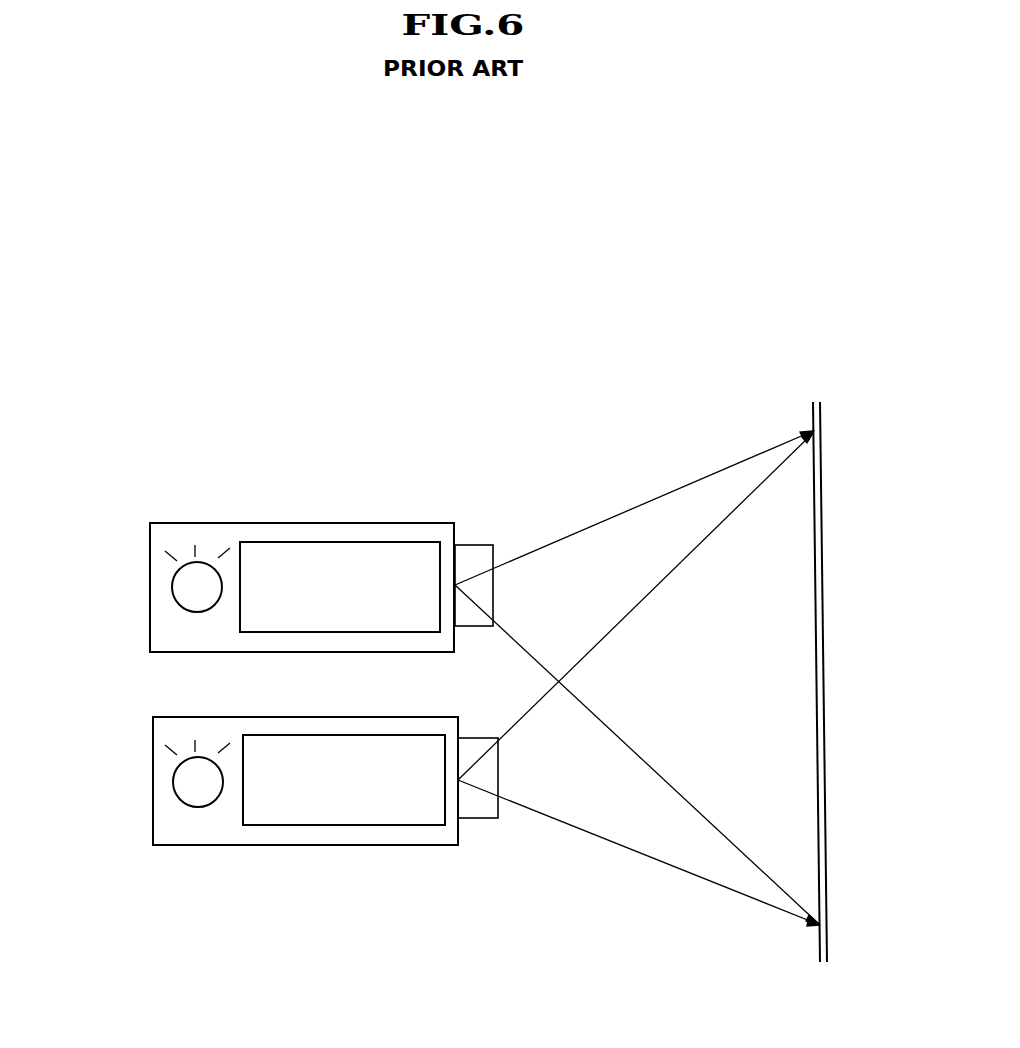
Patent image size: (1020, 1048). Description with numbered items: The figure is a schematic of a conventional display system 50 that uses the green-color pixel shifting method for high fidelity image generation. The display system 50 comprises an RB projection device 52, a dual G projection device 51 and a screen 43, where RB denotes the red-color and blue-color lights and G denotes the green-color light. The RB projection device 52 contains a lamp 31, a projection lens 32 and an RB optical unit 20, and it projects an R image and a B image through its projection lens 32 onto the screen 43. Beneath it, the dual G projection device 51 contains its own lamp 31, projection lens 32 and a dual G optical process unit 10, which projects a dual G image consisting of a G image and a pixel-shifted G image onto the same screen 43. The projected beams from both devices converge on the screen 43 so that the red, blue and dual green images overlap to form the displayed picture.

The display system 50 is at (513, 278).
The RB projection device 52 is at (148, 492).
The RB optical unit 20 is at (340, 587).
The dual G projection device 51 is at (153, 866).
The dual G optical process unit 10 is at (344, 780).
The lamp 31 is at (172, 589).
The projection lens 32 is at (497, 772).
The screen 43 is at (821, 438).